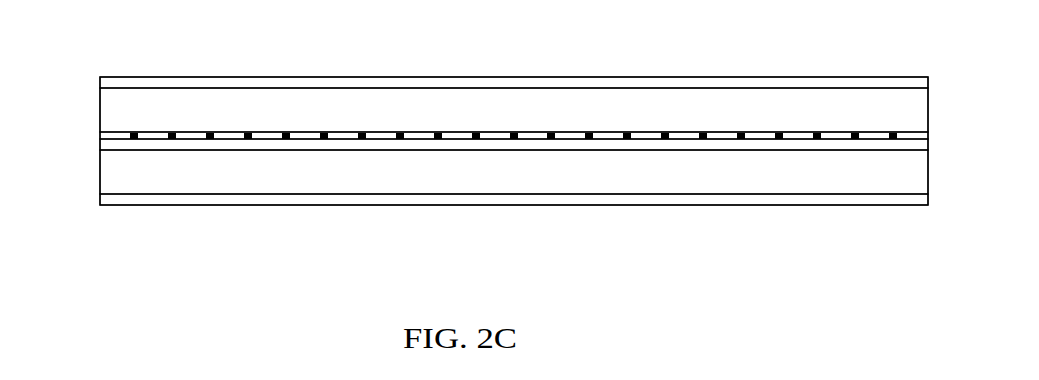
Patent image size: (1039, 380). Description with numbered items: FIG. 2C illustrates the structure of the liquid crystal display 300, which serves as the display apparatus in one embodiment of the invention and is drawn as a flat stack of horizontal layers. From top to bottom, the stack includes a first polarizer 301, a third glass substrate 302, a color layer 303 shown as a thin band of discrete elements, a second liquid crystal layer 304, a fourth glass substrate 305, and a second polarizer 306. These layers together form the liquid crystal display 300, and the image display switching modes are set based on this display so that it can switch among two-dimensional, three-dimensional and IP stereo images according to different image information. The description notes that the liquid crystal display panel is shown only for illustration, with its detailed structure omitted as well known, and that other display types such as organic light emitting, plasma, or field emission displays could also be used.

The liquid crystal display 300 is at (89, 77).
The first polarizer 301 is at (271, 82).
The third glass substrate 302 is at (514, 110).
The color layer 303 is at (647, 135).
The second liquid crystal layer 304 is at (270, 145).
The fourth glass substrate 305 is at (514, 172).
The second polarizer 306 is at (458, 198).